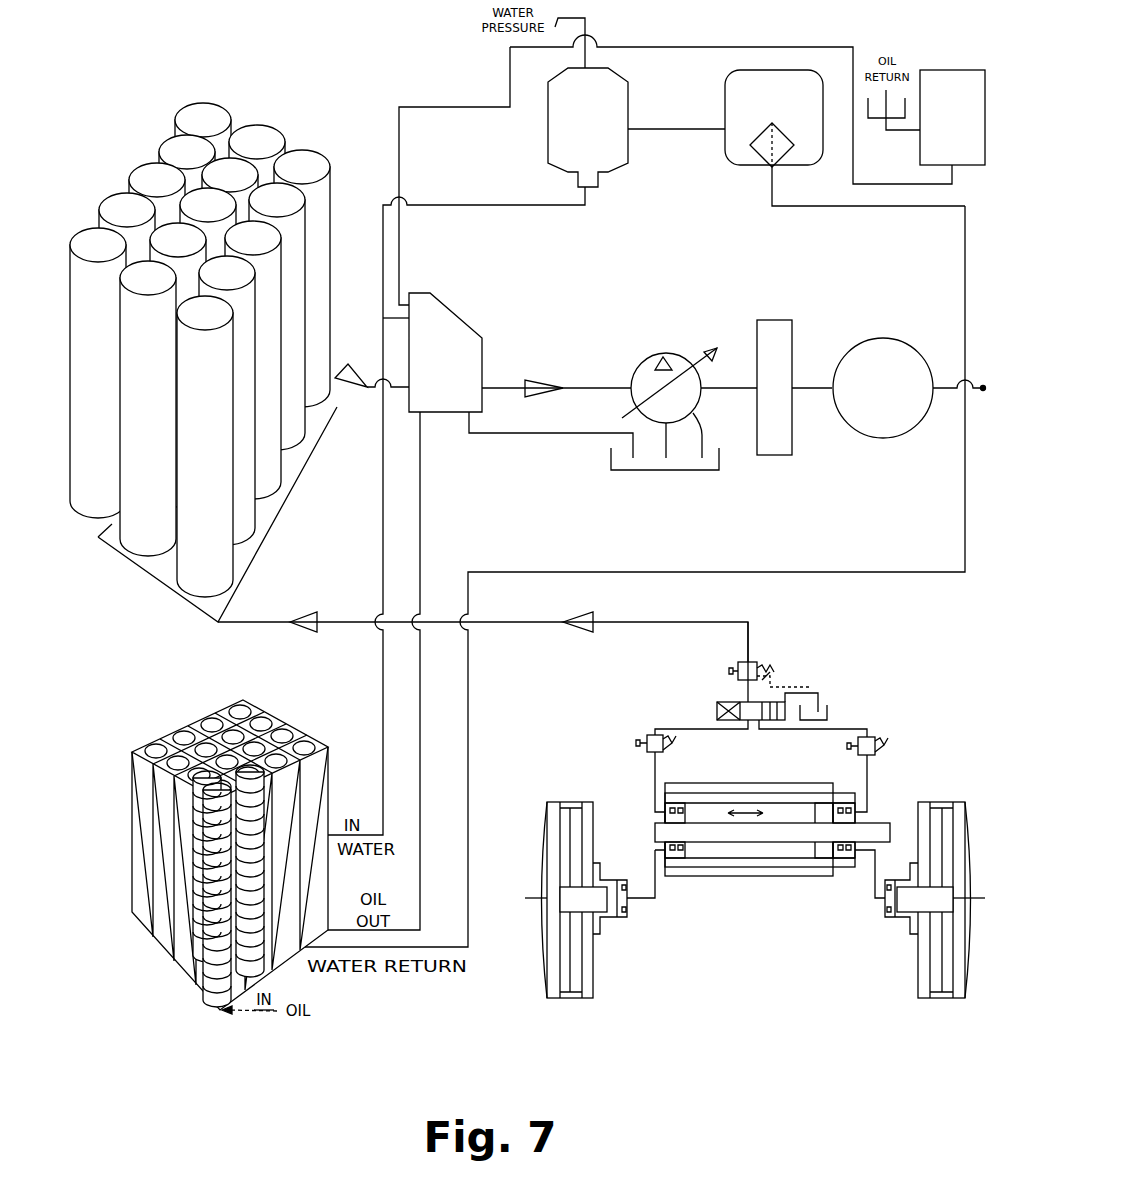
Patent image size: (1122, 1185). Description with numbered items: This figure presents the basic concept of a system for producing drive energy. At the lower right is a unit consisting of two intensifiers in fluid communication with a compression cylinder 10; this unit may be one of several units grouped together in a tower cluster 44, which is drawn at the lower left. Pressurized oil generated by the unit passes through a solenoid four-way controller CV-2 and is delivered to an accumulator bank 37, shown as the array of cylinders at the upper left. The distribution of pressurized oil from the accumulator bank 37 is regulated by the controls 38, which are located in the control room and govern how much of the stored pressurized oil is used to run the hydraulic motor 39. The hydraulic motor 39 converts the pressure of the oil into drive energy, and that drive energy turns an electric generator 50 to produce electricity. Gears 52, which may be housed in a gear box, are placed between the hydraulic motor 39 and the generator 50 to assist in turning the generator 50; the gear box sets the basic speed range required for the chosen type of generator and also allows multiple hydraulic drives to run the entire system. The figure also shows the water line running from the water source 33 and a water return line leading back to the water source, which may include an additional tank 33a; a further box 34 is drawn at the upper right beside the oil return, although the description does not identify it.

The accumulator bank 37 is at (301, 89).
The water source 33 is at (574, 117).
The additional tank 33a is at (752, 107).
The oil return reservoir 34 is at (938, 127).
The controls 38 is at (443, 307).
The hydraulic motor 39 is at (660, 354).
The gears 52 is at (775, 320).
The electric generator 50 is at (880, 338).
The solenoid 4-way controller CV-2 is at (728, 703).
The compression cylinder 10 is at (760, 878).
The tower cluster 44 is at (122, 958).